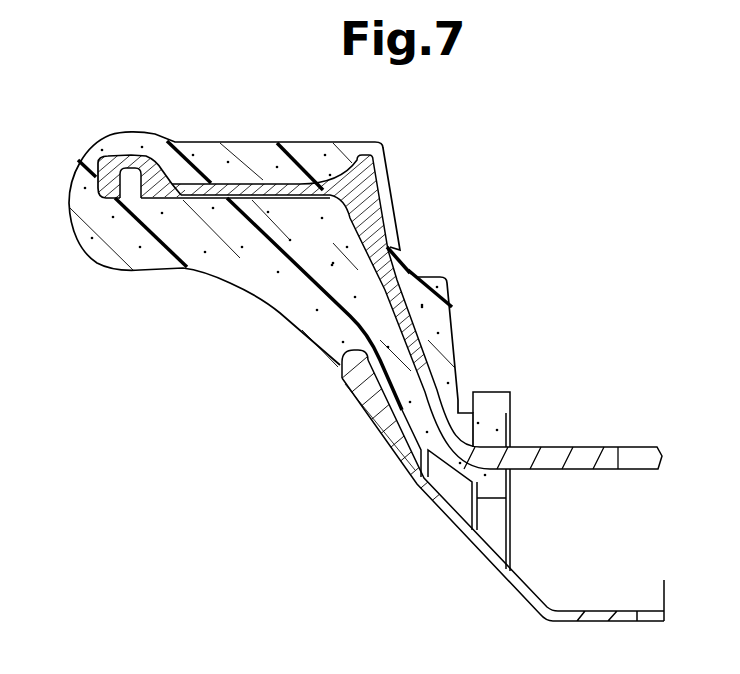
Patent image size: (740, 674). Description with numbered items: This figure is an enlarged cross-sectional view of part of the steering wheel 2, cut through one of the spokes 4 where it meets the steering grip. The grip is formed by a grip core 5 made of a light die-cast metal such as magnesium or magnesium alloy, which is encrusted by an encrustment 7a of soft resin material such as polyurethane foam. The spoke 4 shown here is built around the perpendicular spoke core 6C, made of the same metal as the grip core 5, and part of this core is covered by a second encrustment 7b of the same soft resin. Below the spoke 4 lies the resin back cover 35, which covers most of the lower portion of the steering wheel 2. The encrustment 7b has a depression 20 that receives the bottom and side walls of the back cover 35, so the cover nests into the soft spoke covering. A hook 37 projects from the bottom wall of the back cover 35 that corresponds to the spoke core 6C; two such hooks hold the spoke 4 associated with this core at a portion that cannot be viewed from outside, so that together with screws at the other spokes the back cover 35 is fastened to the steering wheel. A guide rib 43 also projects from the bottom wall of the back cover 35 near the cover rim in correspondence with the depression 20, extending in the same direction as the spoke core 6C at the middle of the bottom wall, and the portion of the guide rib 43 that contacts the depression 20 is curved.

The steering wheel 2 is at (86, 151).
The spoke 4 is at (215, 143).
The grip core 5 is at (123, 157).
The spoke core 6C is at (300, 190).
The encrustment 7a is at (78, 228).
The encrustment 7b is at (262, 290).
The depression 20 is at (340, 378).
The back cover 35 is at (496, 557).
The hook 37 is at (510, 400).
The guide rib 43 is at (348, 391).